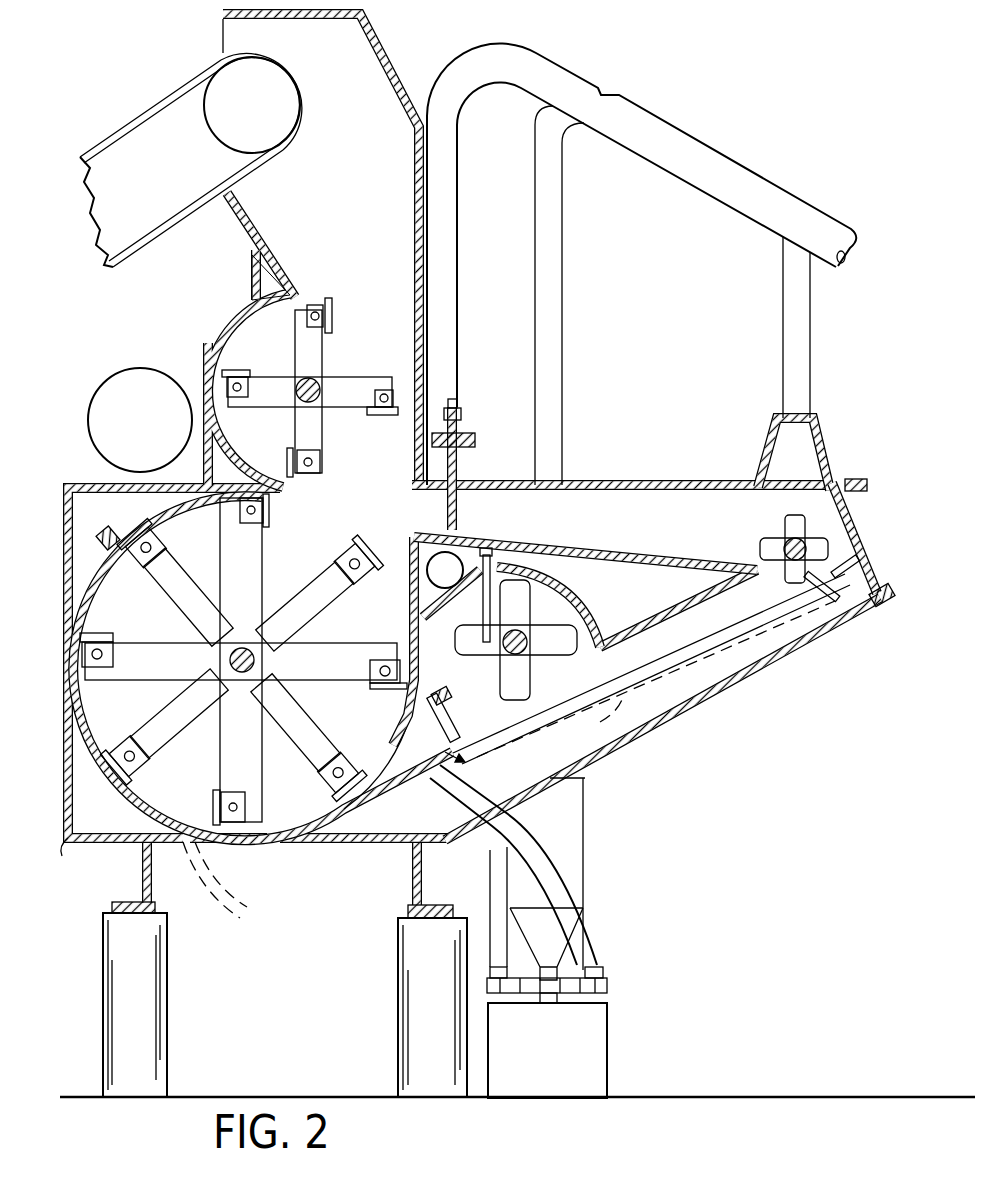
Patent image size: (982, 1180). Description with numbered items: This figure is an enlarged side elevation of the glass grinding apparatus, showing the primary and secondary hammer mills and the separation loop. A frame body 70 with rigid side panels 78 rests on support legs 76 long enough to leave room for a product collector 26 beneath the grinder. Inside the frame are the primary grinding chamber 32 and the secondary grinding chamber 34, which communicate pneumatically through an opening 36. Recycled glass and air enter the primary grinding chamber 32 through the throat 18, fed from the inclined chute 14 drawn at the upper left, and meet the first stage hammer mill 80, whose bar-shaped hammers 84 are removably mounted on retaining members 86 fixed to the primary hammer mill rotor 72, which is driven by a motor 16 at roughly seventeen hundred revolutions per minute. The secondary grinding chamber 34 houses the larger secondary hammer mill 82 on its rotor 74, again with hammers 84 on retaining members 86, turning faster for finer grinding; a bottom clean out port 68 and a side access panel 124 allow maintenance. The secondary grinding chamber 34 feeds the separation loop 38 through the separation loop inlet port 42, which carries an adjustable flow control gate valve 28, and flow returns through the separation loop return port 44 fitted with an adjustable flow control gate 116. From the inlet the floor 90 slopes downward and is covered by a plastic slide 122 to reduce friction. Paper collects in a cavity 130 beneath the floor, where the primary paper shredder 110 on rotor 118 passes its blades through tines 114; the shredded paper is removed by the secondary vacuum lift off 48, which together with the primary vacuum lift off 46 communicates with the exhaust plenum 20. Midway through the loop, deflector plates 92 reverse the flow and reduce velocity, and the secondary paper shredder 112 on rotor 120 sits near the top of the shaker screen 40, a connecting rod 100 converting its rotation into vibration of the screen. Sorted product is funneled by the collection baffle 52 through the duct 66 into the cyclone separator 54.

The feed chute 14 is at (151, 193).
The motor 16 is at (153, 435).
The throat 18 is at (368, 140).
The exhaust plenum 20 is at (641, 264).
The product collector 26 is at (610, 1037).
The adjustable flow control gate valve 28 is at (462, 515).
The primary grinding chamber 32 is at (261, 441).
The secondary grinding chamber 34 is at (125, 711).
The opening 36 is at (345, 515).
The separation loop 38 is at (620, 531).
The shaker screen 40 is at (560, 760).
The separation loop inlet port 42 is at (405, 517).
The separation loop return port 44 is at (418, 769).
The primary vacuum lift off 46 is at (794, 363).
The secondary vacuum lift off 48 is at (483, 553).
The collection baffle 52 is at (536, 774).
The cyclone separator 54 is at (587, 890).
The duct 66 is at (572, 803).
The bottom clean out port 68 is at (246, 897).
The frame body 70 is at (90, 484).
The primary hammer mill rotor 72 is at (314, 380).
The secondary hammer mill rotor 74 is at (241, 645).
The support legs 76 is at (160, 895).
The rigid side panels 78 is at (62, 846).
The first stage hammer mill 80 is at (302, 347).
The secondary hammer mill 82 is at (326, 604).
The hammers 84 is at (383, 416).
The retaining members 86 is at (318, 445).
The floor 90 is at (576, 607).
The deflector plates 92 is at (840, 486).
The connecting rod 100 is at (855, 616).
The primary paper shredder 110 is at (531, 690).
The secondary paper shredder 112 is at (787, 530).
The tines 114 is at (490, 600).
The adjustable flow control gate 116 is at (459, 714).
The rotor 118 is at (522, 634).
The rotor 120 is at (790, 568).
The plastic slide 122 is at (662, 564).
The side access panel 124 is at (100, 533).
The cavity 130 is at (476, 693).